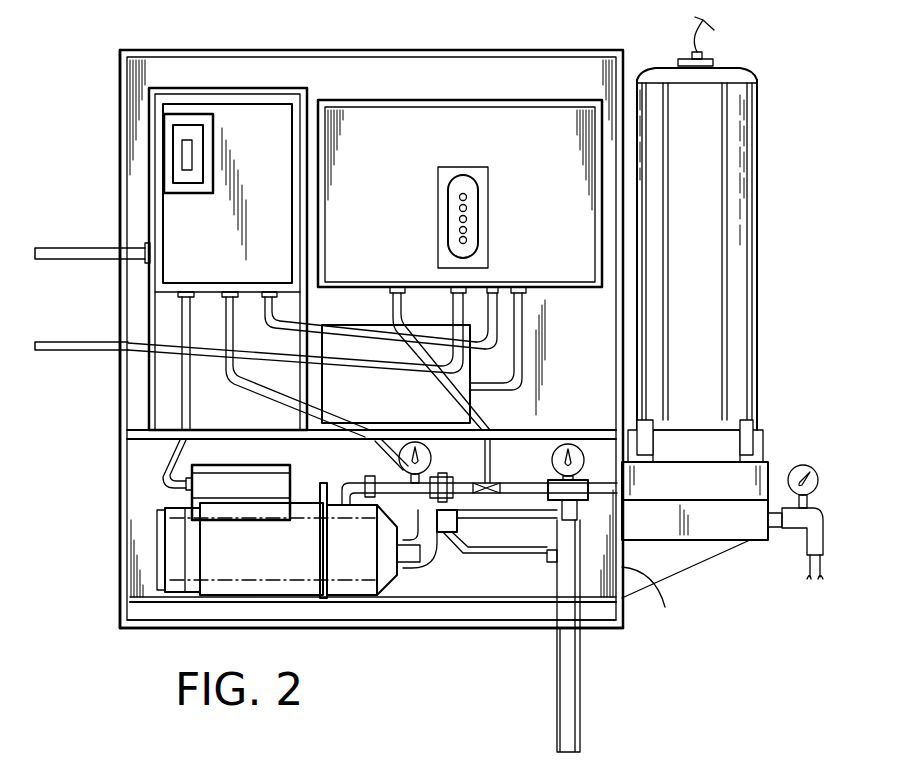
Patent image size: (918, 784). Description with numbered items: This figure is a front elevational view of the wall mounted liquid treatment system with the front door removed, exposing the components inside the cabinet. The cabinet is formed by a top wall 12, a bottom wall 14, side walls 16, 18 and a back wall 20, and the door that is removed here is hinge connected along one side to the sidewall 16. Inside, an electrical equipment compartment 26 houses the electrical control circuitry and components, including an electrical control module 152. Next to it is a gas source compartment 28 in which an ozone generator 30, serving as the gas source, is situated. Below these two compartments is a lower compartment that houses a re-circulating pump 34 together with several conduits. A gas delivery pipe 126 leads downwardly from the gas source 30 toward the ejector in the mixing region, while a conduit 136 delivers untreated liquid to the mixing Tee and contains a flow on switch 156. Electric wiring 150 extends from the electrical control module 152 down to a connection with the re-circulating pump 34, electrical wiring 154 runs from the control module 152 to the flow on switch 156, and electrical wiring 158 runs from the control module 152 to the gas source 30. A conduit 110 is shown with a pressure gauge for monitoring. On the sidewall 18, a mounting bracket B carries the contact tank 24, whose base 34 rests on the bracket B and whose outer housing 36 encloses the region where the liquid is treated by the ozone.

The top wall 12 is at (278, 52).
The bottom wall 14 is at (370, 627).
The side wall 16 is at (120, 472).
The side wall 18 is at (658, 595).
The back wall 20 is at (183, 62).
The contact tank 24 is at (729, 239).
The electrical equipment compartment 26 is at (167, 311).
The gas source compartment 28 is at (505, 100).
The ozone generator 30 is at (385, 117).
The re-circulating pump 34 is at (220, 582).
The outer housing 36 is at (716, 160).
The conduit 110 is at (820, 520).
The gas delivery pipe 126 is at (392, 305).
The conduit 136 is at (578, 722).
The electric wiring 150 is at (178, 402).
The electrical control module 152 is at (170, 220).
The electrical wiring 154 is at (483, 565).
The flow on switch 156 is at (548, 563).
The electrical wiring 158 is at (457, 300).
The mounting bracket B is at (700, 553).